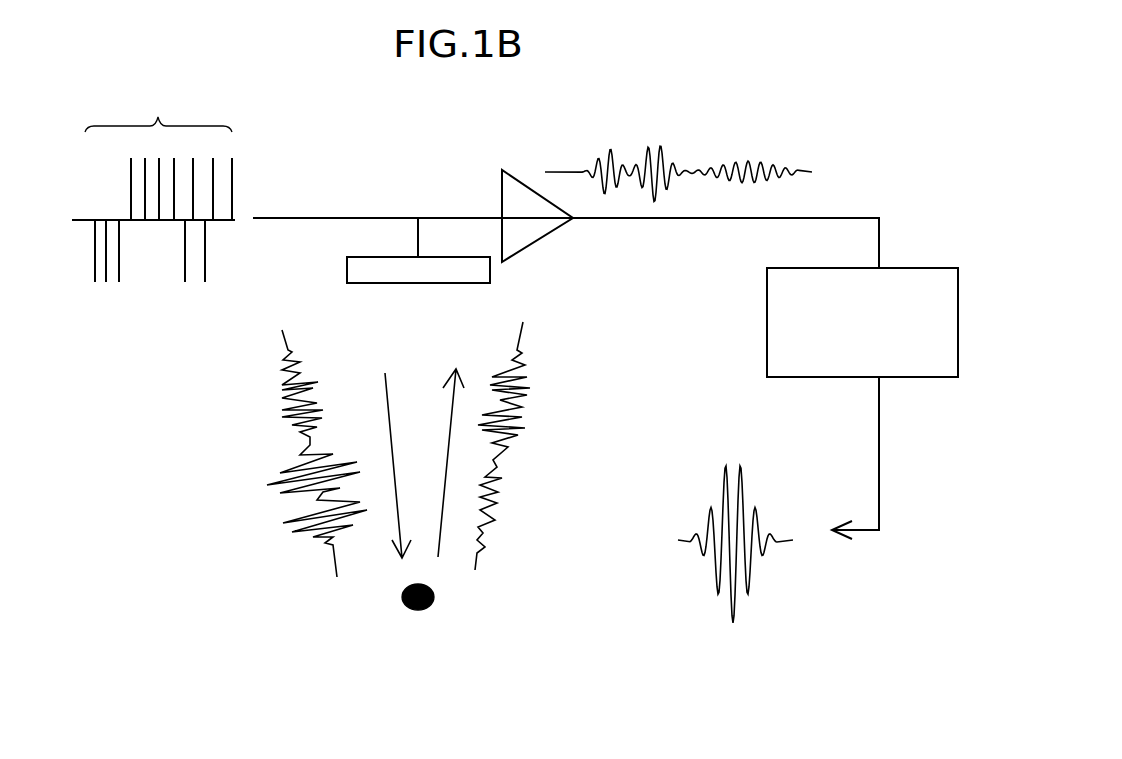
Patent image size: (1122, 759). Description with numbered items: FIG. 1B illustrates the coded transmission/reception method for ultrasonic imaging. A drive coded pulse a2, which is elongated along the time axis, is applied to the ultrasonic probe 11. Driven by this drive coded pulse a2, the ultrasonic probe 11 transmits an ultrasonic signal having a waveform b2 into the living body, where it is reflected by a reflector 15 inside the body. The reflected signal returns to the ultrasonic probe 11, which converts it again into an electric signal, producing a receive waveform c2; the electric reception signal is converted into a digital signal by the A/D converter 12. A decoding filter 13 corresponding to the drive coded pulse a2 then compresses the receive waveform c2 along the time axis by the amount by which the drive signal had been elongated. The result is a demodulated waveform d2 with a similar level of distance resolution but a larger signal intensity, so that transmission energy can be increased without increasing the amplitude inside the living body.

The ultrasonic probe 11 is at (347, 270).
The A/D converter 12 is at (500, 190).
The decoding filter 13 is at (903, 268).
The reflector 15 is at (402, 607).
The drive coded pulse a2 is at (153, 178).
The ultrasonic signal waveform b2 is at (292, 453).
The receive waveform c2 is at (678, 153).
The demodulated waveform d2 is at (735, 519).